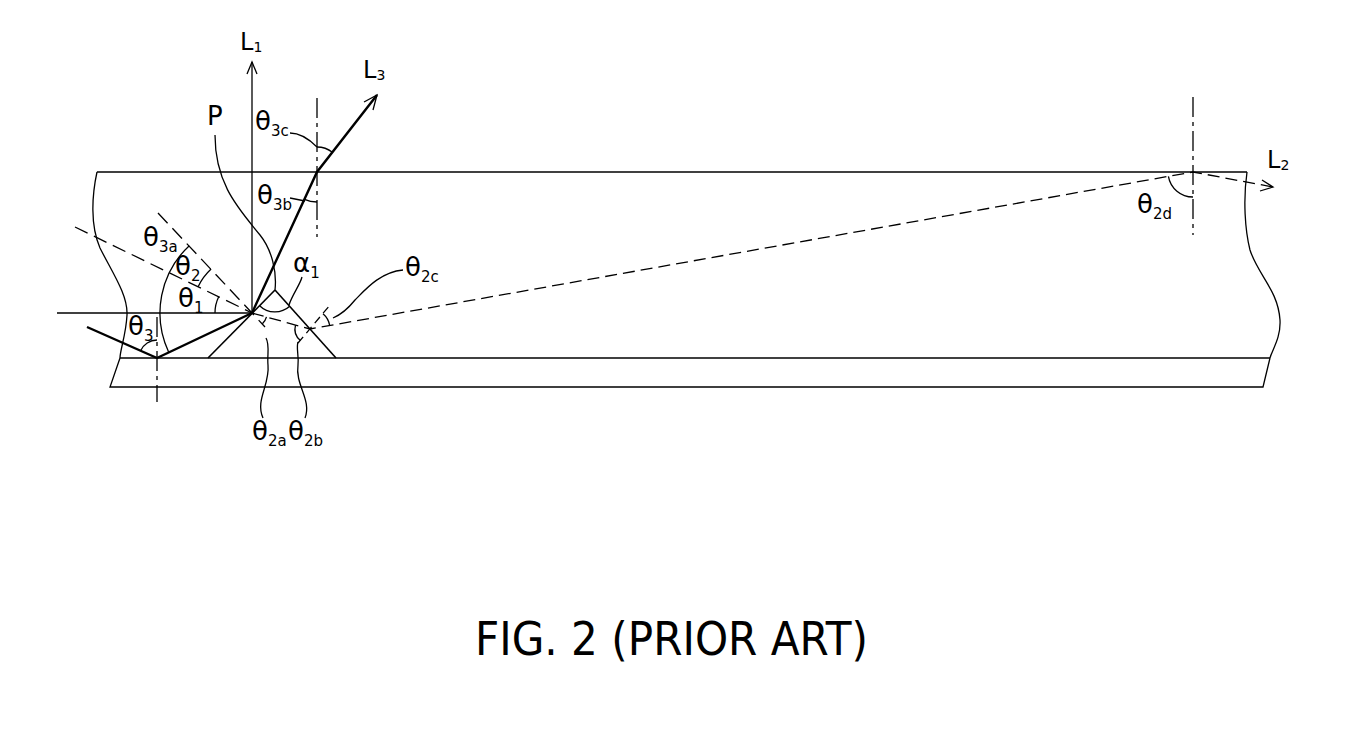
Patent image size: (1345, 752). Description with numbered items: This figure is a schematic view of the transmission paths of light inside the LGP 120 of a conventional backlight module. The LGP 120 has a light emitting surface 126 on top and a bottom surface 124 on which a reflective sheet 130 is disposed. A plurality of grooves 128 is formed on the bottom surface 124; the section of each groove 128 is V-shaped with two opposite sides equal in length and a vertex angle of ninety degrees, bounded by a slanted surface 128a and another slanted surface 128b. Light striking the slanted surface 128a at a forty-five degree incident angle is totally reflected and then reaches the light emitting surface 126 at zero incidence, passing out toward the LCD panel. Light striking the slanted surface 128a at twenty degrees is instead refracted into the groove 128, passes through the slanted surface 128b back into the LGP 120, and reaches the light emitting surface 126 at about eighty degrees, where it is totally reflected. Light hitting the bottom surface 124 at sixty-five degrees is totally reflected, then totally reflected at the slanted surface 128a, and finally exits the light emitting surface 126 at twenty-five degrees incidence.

The LGP 120 is at (1210, 253).
The bottom surface 124 is at (1063, 362).
The light emitting surface 126 is at (154, 160).
The groove 128 is at (277, 421).
The slanted surface 128a is at (231, 341).
The slanted surface 128b is at (330, 348).
The reflective sheet 130 is at (1220, 370).